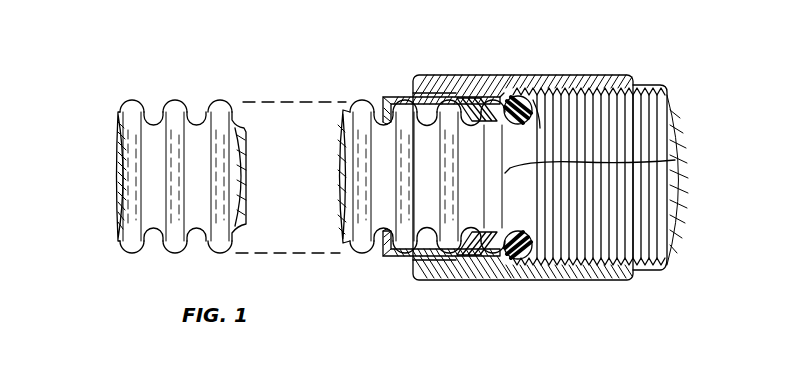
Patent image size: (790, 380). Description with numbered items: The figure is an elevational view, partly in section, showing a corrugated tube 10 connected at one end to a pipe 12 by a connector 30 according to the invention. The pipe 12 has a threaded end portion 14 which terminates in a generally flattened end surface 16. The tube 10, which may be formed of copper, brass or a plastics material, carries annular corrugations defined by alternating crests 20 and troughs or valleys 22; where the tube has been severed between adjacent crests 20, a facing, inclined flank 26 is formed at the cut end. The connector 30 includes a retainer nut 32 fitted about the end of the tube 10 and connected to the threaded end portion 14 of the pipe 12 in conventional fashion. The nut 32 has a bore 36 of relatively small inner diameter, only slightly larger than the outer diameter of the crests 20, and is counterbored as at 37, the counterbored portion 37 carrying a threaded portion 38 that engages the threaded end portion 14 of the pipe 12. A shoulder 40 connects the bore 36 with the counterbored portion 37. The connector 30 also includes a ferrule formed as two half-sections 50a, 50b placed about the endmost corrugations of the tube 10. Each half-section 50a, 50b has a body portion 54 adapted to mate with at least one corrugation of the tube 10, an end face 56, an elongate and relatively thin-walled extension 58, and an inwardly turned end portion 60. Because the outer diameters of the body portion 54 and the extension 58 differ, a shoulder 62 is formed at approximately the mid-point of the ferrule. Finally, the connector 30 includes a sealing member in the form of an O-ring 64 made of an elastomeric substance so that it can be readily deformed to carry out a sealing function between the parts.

The tube 10 is at (215, 60).
The pipe 12 is at (673, 265).
The threaded end portion 14 is at (590, 169).
The flattened end surface 16 is at (553, 97).
The crests 20 is at (176, 108).
The valleys 22 is at (152, 124).
The inclined flank 26 is at (118, 110).
The connector 30 is at (500, 45).
The retainer nut 32 is at (417, 75).
The bore 36 is at (447, 97).
The counterbored portion 37 is at (489, 265).
The threaded portion 38 is at (536, 130).
The shoulder 40 is at (470, 97).
The ferrule half-section 50a is at (392, 85).
The ferrule half-section 50b is at (390, 270).
The body portion 54 is at (476, 97).
The end face 56 is at (513, 97).
The extension 58 is at (438, 168).
The inwardly turned end portion 60 is at (385, 100).
The shoulder 62 is at (450, 97).
The O-ring 64 is at (537, 257).